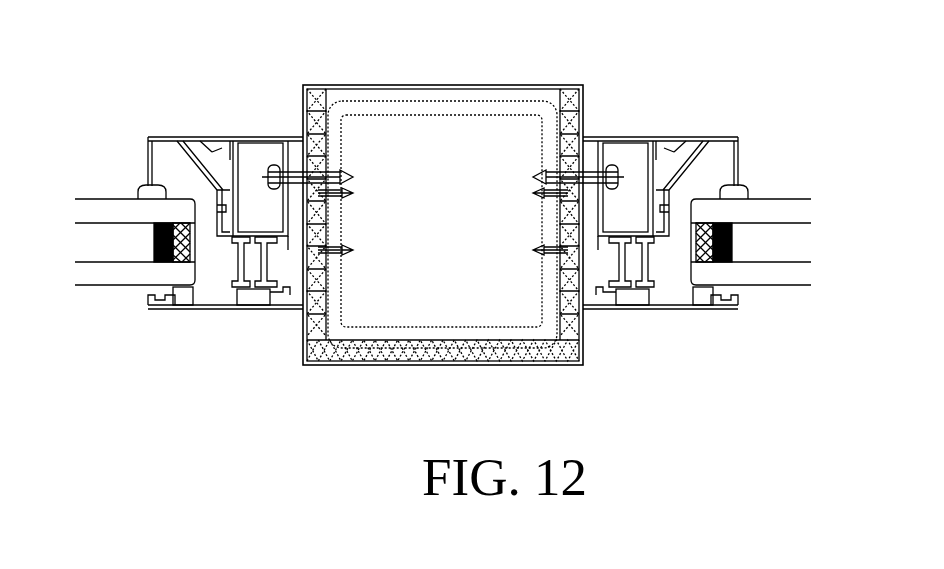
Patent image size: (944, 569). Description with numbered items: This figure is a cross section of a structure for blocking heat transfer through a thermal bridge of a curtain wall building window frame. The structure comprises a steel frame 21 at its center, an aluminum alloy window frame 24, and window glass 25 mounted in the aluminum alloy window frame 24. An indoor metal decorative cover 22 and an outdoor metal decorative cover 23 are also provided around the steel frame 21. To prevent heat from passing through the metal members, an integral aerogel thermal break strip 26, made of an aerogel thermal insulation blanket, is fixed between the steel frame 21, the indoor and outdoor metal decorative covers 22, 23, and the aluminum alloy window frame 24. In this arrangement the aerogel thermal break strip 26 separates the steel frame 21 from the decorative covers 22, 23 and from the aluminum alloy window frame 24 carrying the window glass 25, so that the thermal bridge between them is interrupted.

The steel frame 21 is at (418, 105).
The indoor metal decorative cover 22 is at (340, 88).
The outdoor metal decorative cover 23 is at (385, 360).
The aluminum alloy window frame 24 is at (232, 292).
The window glass 25 is at (112, 270).
The integral aerogel thermal break strip 26 is at (312, 360).